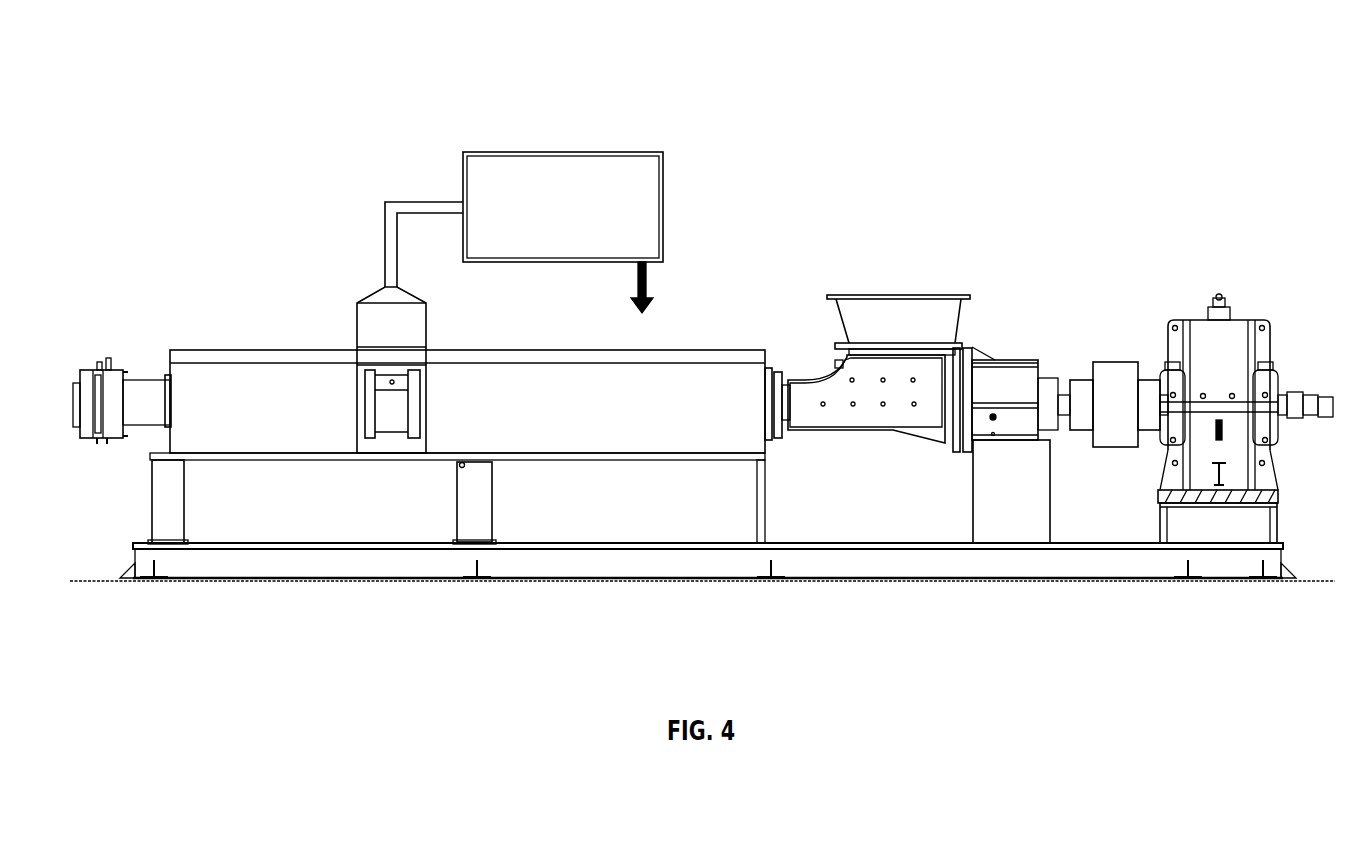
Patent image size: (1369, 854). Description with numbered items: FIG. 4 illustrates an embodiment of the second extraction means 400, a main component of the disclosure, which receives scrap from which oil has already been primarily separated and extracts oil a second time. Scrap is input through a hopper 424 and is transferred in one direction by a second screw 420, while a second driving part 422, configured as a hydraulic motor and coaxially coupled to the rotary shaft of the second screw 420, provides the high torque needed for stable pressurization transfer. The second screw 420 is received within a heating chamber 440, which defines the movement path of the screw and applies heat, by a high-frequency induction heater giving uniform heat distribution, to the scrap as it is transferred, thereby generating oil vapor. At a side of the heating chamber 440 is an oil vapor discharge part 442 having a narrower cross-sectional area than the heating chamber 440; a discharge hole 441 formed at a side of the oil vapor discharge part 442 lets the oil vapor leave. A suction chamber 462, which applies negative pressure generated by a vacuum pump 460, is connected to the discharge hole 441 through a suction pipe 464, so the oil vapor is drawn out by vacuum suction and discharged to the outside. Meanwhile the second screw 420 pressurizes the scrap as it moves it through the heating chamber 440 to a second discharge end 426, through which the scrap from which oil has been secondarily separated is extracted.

The second extraction means 400 is at (72, 84).
The second screw 420 is at (865, 410).
The second driving part 422 is at (1245, 333).
The hopper 424 is at (902, 307).
The second discharge end 426 is at (84, 362).
The heating chamber 440 is at (718, 350).
The discharge hole 441 is at (398, 384).
The oil vapor discharge part 442 is at (352, 382).
The vacuum pump 460 is at (561, 150).
The suction chamber 462 is at (372, 290).
The suction pipe 464 is at (418, 197).